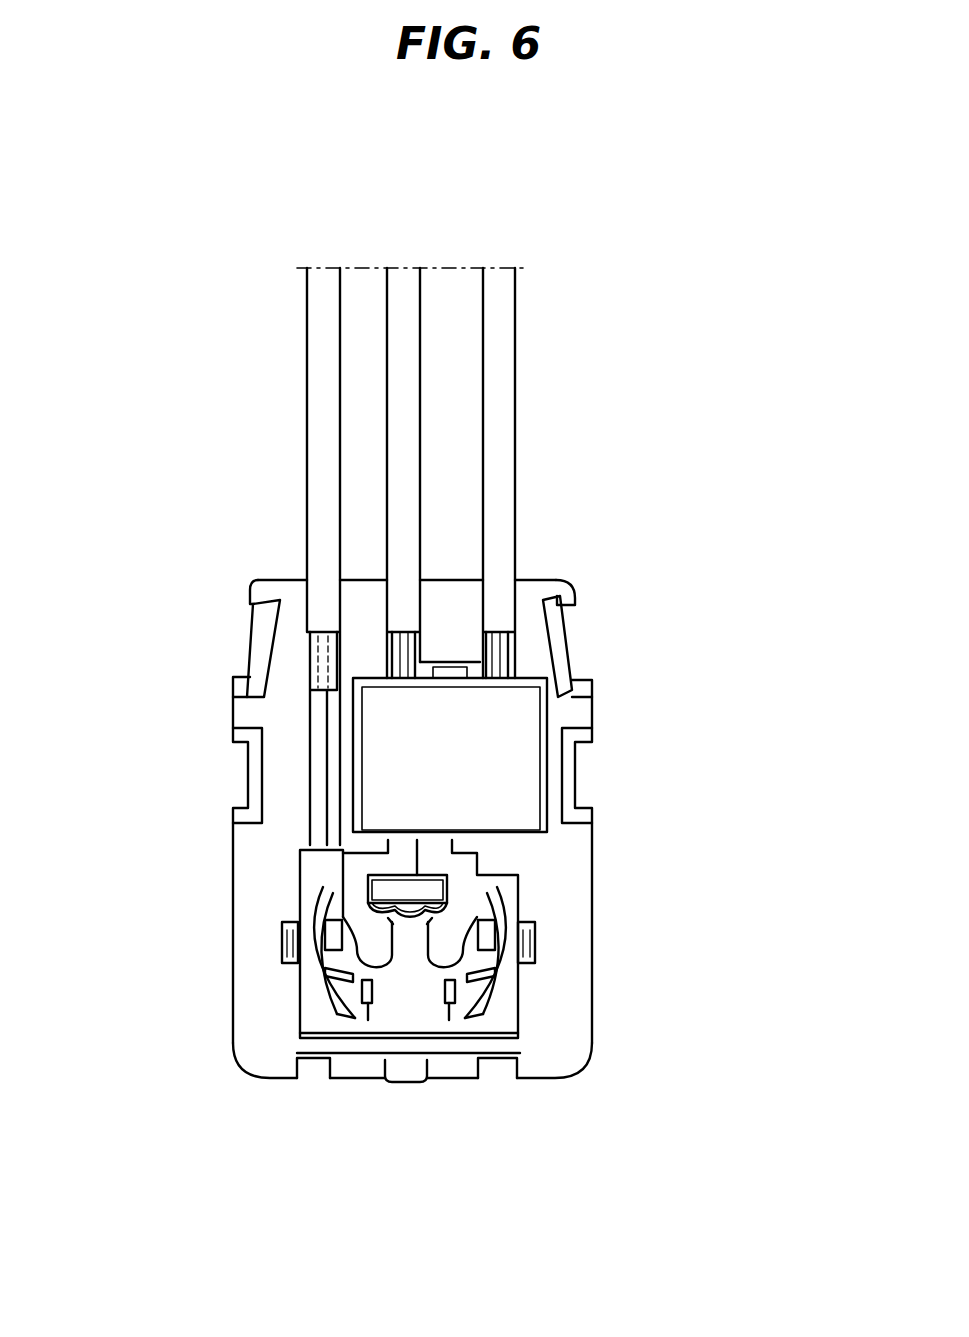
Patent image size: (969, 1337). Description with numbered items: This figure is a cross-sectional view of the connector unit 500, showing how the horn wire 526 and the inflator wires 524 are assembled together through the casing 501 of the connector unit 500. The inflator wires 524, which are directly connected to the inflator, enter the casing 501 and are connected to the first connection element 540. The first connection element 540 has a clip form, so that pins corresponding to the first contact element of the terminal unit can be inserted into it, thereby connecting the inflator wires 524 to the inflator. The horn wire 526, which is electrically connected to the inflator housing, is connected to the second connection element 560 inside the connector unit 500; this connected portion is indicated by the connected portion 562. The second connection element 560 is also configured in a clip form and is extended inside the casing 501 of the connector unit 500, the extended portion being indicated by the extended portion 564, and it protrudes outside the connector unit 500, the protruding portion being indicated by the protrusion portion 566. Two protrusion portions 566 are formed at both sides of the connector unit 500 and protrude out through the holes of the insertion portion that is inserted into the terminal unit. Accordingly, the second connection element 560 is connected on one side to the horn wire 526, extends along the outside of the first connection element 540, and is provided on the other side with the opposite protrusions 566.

The connector unit 500 is at (636, 858).
The casing 501 is at (585, 972).
The inflator wires 524 is at (498, 322).
The horn wire 526 is at (320, 440).
The first connection element 540 is at (445, 950).
The second connection element 560 is at (293, 889).
The connected portion 562 is at (322, 757).
The extended portion 564 is at (317, 1060).
The protrusion portion 566 is at (283, 955).